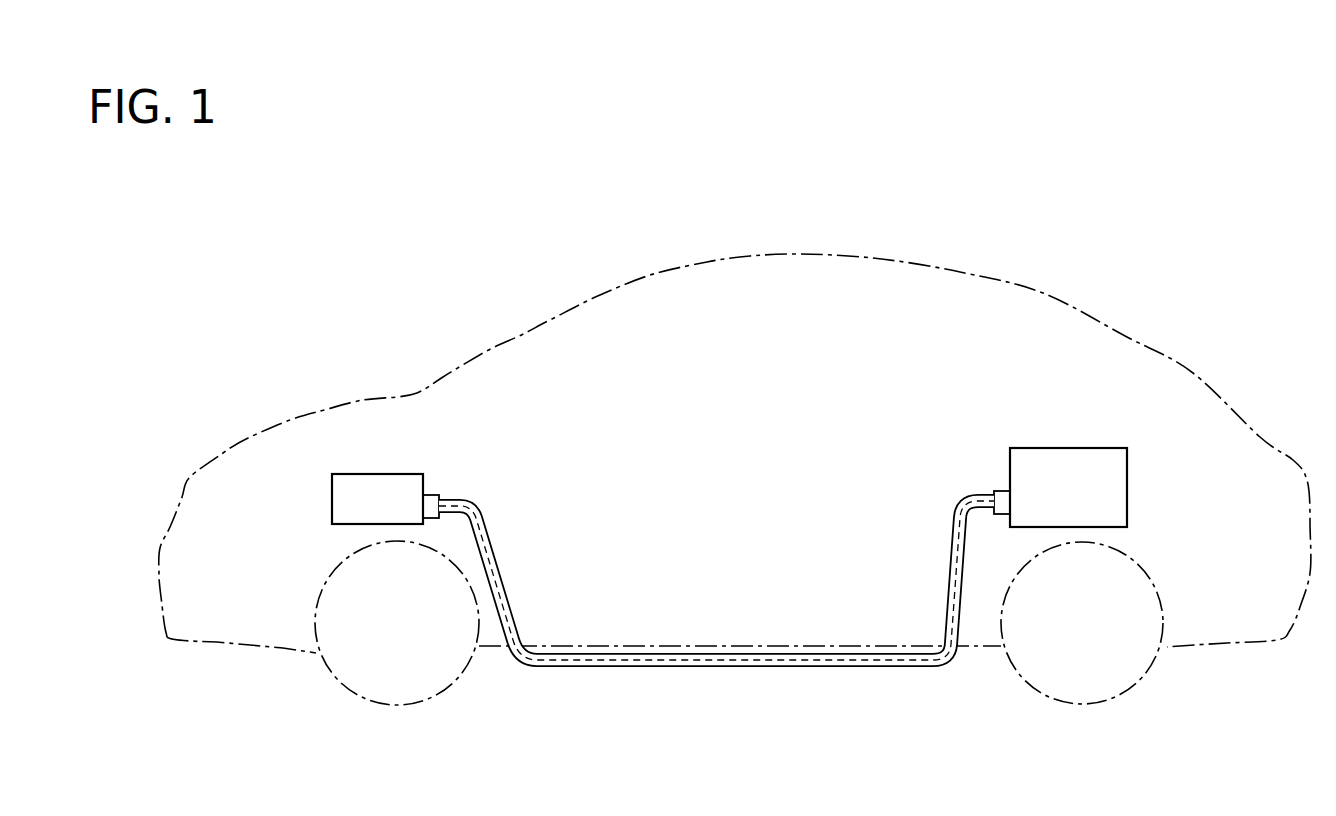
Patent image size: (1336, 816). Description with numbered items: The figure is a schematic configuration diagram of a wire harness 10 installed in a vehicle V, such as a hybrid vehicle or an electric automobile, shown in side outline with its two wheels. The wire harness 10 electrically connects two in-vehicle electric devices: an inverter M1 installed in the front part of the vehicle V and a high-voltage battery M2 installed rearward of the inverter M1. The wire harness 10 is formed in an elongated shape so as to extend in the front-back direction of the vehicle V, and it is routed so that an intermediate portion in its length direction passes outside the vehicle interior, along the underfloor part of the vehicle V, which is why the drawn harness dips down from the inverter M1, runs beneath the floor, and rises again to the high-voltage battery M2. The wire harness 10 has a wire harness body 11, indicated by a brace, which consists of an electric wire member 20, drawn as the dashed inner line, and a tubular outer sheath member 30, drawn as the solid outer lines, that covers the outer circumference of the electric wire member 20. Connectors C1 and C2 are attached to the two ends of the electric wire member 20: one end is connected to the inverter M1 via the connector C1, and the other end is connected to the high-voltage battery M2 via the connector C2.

The vehicle V is at (1041, 294).
The wire harness 10 is at (729, 518).
The wire harness body 11 is at (716, 580).
The electric wire member 20 is at (956, 546).
The outer sheath member 30 is at (949, 581).
The inverter M1 is at (384, 474).
The high-voltage battery M2 is at (1098, 448).
The connector C1 is at (436, 494).
The connector C2 is at (1000, 490).